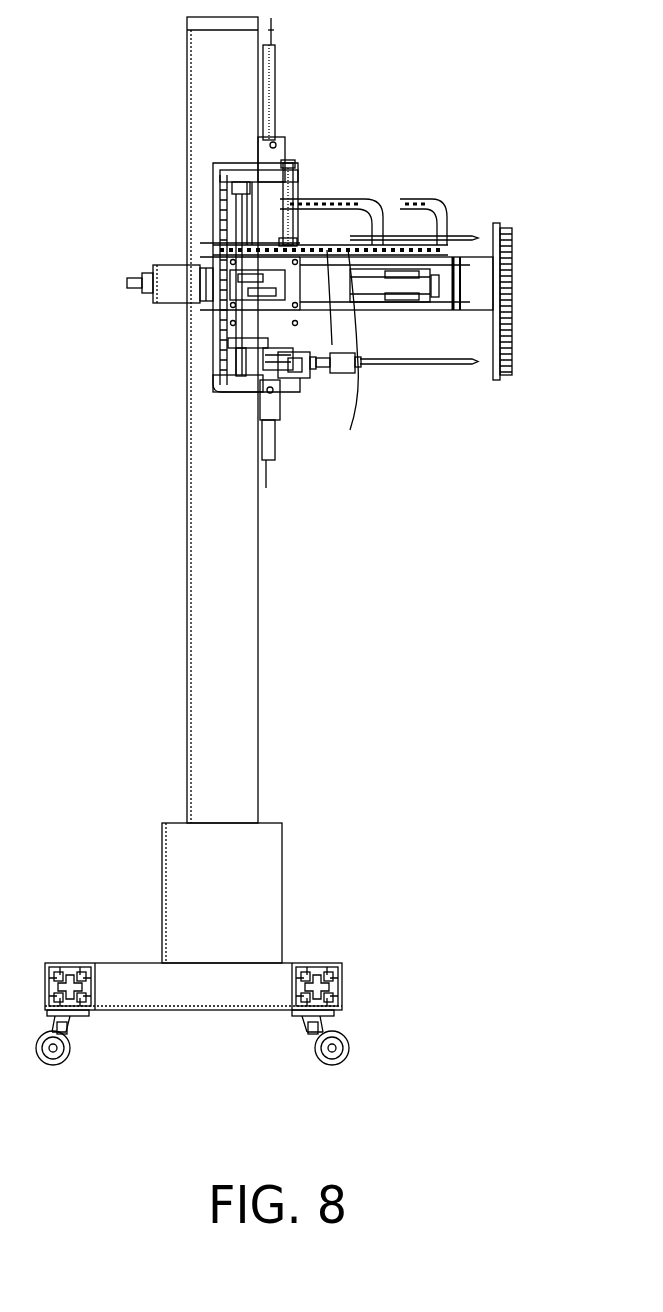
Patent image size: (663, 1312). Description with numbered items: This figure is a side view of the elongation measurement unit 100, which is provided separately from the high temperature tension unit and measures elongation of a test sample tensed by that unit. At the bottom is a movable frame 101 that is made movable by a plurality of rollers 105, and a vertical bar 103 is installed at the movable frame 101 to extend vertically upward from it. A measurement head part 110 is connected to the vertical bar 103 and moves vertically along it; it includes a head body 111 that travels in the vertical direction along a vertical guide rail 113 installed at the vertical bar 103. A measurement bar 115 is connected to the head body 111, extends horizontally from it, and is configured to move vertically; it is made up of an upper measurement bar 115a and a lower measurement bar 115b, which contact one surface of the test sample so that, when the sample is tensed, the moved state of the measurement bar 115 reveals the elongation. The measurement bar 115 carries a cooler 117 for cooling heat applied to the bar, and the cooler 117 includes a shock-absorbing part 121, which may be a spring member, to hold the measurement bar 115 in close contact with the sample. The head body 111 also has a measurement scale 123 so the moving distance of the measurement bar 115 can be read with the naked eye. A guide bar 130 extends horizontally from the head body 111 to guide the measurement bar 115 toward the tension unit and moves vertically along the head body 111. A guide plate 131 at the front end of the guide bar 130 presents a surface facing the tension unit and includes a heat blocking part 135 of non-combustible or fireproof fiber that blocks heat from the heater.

The elongation measurement unit 100 is at (352, 932).
The movable frame 101 is at (131, 972).
The vertical bar 103 is at (248, 525).
The rollers 105 is at (348, 1036).
The measurement head part 110 is at (299, 142).
The head body 111 is at (217, 377).
The vertical guide rail 113 is at (292, 181).
The measurement bar 115 is at (487, 418).
The upper measurement bar 115a is at (467, 240).
The lower measurement bar 115b is at (400, 368).
The cooler 117 is at (341, 374).
The shock-absorbing part 121 is at (325, 355).
The measurement scale 123 is at (212, 326).
The guide bar 130 is at (487, 283).
The guide plate 131 is at (497, 380).
The heat blocking part 135 is at (507, 255).